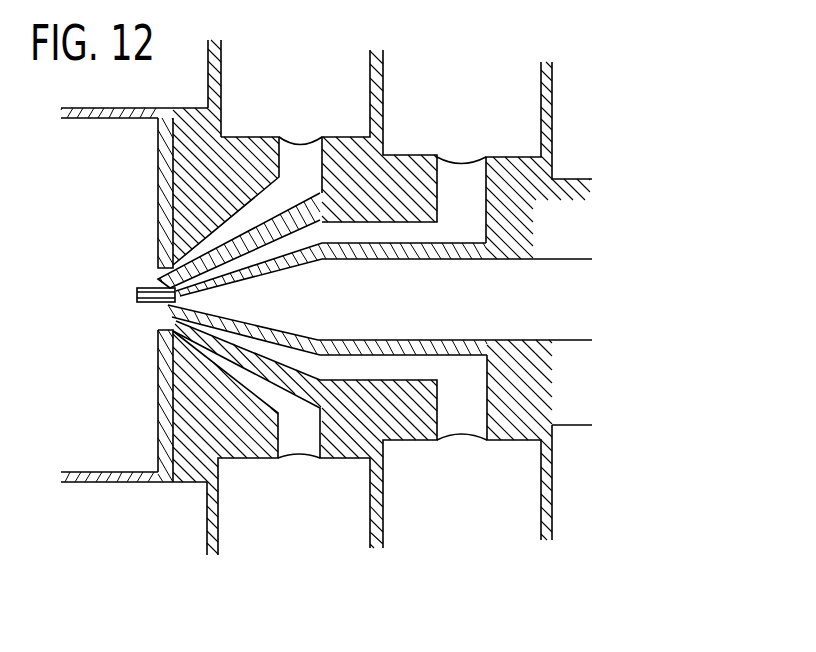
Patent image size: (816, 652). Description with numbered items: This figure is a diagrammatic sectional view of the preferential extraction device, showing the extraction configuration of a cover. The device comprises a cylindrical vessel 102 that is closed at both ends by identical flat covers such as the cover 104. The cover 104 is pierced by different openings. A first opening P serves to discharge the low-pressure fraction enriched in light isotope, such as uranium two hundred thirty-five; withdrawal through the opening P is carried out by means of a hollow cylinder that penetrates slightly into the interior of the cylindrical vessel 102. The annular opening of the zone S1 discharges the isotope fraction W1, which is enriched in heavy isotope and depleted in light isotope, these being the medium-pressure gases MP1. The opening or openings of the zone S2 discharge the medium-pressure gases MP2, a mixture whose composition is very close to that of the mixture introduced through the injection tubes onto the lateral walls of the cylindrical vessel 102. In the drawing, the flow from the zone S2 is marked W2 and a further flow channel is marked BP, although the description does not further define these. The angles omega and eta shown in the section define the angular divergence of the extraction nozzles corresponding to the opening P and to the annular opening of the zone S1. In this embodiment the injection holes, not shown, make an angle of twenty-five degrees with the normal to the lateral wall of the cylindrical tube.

The cylindrical vessel 102 is at (132, 482).
The cover 104 is at (168, 419).
The first opening P is at (133, 297).
The zone S1 (annular opening) S1 is at (150, 287).
The zone S2 (opening) S2 is at (155, 275).
The isotope fraction W1 is at (312, 234).
The second return flow channel W2 is at (297, 163).
The bypass channel flow BP is at (400, 297).
The medium-pressure gases MP1 is at (460, 420).
The medium-pressure gases MP2 is at (299, 432).